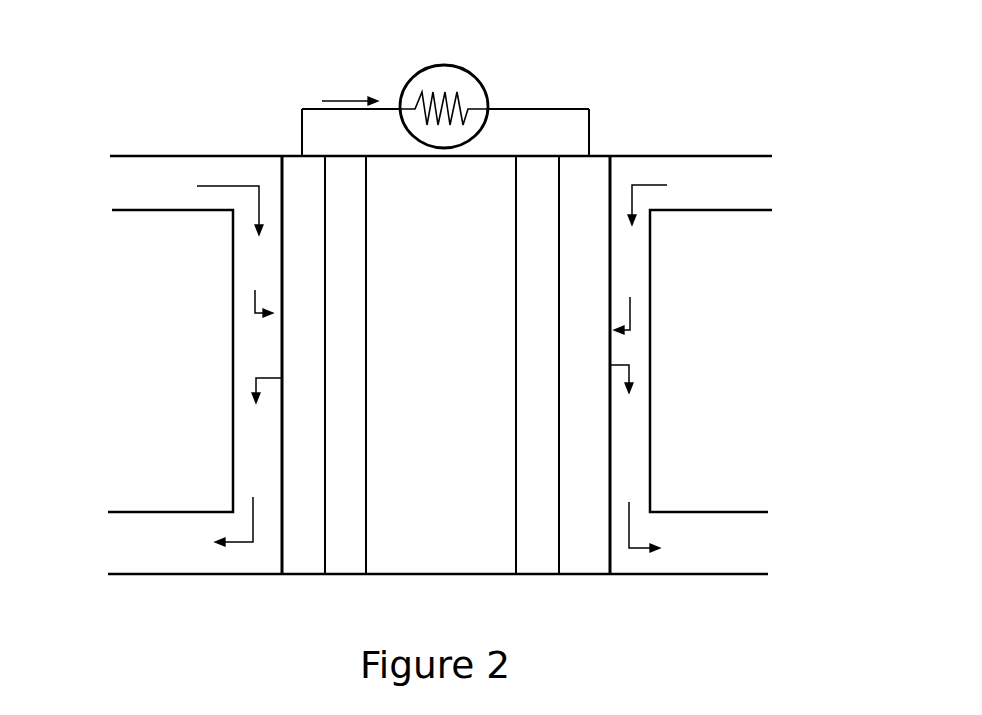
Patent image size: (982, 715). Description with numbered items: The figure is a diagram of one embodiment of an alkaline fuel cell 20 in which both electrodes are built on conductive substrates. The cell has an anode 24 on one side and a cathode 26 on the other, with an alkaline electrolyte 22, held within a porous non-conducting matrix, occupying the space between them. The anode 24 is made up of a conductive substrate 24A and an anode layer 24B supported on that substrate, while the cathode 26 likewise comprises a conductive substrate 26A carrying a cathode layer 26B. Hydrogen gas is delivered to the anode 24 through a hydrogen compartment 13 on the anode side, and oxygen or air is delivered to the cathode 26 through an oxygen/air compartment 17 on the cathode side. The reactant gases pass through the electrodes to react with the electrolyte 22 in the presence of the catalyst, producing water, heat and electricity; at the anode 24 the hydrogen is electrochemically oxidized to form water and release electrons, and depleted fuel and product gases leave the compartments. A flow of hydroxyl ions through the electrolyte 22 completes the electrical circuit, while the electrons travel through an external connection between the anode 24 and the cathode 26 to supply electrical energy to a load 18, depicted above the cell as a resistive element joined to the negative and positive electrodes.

The hydrogen compartment 13 is at (207, 346).
The oxygen/air compartment 17 is at (660, 335).
The load 18 is at (468, 60).
The alkaline fuel cell 20 is at (726, 71).
The alkaline electrolyte 22 is at (428, 588).
The anode 24 is at (323, 392).
The conductive substrate 24A is at (301, 365).
The anode layer 24B is at (342, 365).
The cathode 26 is at (561, 391).
The conductive substrate 26A is at (588, 365).
The cathode layer 26B is at (539, 365).